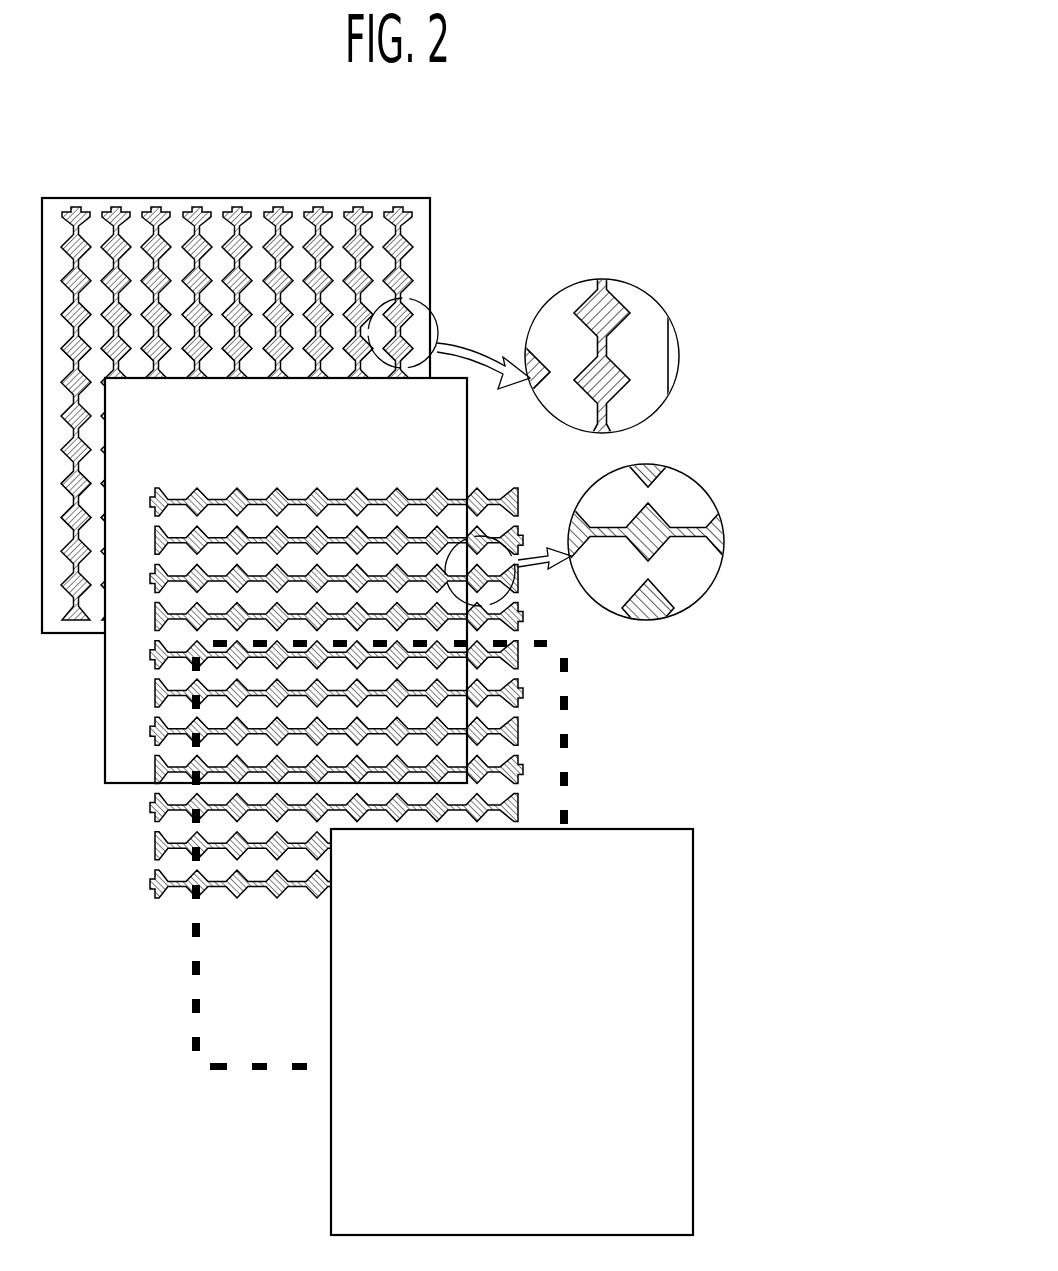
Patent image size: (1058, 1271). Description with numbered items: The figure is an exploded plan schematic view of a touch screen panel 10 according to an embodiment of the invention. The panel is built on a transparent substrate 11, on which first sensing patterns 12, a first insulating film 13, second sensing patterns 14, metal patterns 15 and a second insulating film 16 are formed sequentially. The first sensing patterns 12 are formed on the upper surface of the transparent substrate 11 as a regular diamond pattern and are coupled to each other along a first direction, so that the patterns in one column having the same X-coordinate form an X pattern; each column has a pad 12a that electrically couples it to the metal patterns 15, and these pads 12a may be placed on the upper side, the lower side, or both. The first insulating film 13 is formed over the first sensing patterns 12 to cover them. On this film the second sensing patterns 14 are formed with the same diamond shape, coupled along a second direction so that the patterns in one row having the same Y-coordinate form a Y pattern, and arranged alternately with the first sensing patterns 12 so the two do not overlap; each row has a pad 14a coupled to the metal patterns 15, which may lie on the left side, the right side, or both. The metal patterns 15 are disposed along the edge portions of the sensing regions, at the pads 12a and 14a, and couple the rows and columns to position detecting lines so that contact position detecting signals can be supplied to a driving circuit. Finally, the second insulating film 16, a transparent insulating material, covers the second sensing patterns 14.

The touch screen panel 10 is at (788, 240).
The transparent substrate 11 is at (431, 238).
The first sensing patterns 12 is at (378, 379).
The pads of the first sensing patterns 12a is at (396, 212).
The first insulating film 13 is at (468, 440).
The second sensing patterns 14 is at (480, 653).
The pads of the second sensing patterns 14a is at (152, 495).
The metal patterns 15 is at (569, 699).
The second insulating film 16 is at (693, 848).